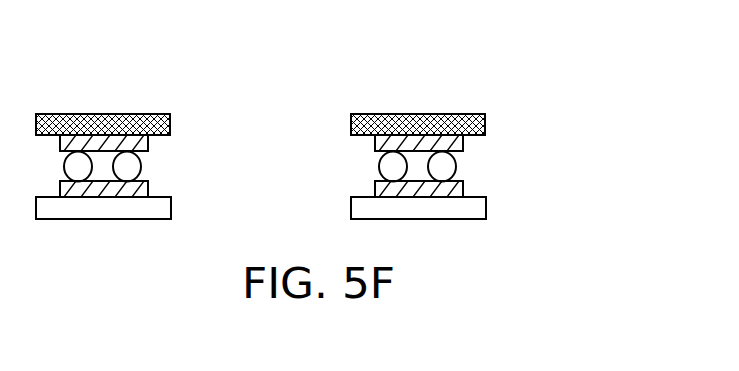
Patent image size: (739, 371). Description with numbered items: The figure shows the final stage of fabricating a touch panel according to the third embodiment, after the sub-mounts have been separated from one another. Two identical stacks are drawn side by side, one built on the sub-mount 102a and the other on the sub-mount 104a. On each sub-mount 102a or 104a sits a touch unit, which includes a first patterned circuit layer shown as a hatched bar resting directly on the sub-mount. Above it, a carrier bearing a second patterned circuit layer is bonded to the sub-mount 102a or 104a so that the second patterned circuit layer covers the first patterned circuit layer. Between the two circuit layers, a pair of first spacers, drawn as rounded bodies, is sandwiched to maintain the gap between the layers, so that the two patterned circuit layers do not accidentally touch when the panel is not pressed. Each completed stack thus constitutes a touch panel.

The sub-mount 102a is at (165, 207).
The sub-mount 104a is at (480, 207).